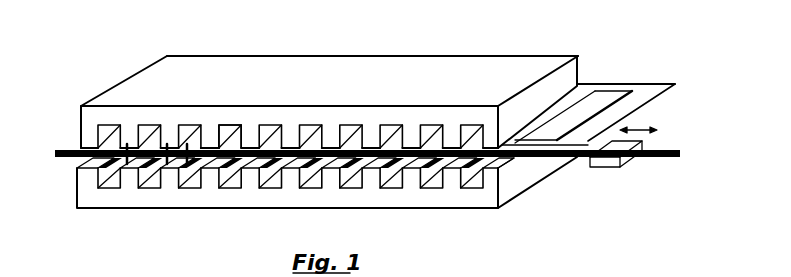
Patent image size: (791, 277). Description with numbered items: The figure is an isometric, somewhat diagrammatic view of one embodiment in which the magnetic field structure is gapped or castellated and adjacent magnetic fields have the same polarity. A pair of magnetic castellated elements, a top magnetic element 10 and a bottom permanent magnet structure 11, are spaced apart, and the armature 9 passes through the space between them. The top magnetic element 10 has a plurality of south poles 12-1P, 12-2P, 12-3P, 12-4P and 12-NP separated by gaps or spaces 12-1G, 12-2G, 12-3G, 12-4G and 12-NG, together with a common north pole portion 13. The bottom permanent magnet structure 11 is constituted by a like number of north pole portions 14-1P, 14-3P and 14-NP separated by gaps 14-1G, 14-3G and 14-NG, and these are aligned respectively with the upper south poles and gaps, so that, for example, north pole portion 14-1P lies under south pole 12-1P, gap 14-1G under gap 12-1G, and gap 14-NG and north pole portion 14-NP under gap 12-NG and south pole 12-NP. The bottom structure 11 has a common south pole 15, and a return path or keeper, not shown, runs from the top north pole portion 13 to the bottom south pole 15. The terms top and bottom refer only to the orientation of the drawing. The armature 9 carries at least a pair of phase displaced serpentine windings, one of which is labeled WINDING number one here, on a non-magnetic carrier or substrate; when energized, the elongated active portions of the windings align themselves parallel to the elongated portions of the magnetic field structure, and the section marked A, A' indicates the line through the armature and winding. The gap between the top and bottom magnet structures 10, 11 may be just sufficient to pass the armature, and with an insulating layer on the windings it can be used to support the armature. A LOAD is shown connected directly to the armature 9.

The armature 9 is at (636, 119).
The top magnetic castellated element 10 is at (578, 56).
The bottom permanent magnet structure 11 is at (508, 205).
The common north pole portion 13 is at (326, 113).
The common south pole 15 is at (301, 209).
The south pole 12-1P is at (84, 139).
The gap 12-1G is at (103, 130).
The south pole 12-2P is at (126, 134).
The gap 12-2G is at (153, 133).
The south pole 12-3P is at (170, 132).
The gap 12-3G is at (184, 133).
The south pole 12-4P is at (213, 133).
The gap 12-4G is at (231, 133).
The gap 12-NG is at (468, 130).
The south pole 12-NP is at (489, 128).
The north pole portion 14-1P is at (97, 190).
The gap 14-1G is at (113, 190).
The north pole portion 14-3P is at (167, 190).
The gap 14-3G is at (190, 190).
The gap 14-NG is at (473, 190).
The north pole portion 14-NP is at (488, 192).
The point A is at (679, 96).
The point A prime A' is at (566, 168).
The winding #1 WINDING is at (588, 84).
The load LOAD is at (626, 160).